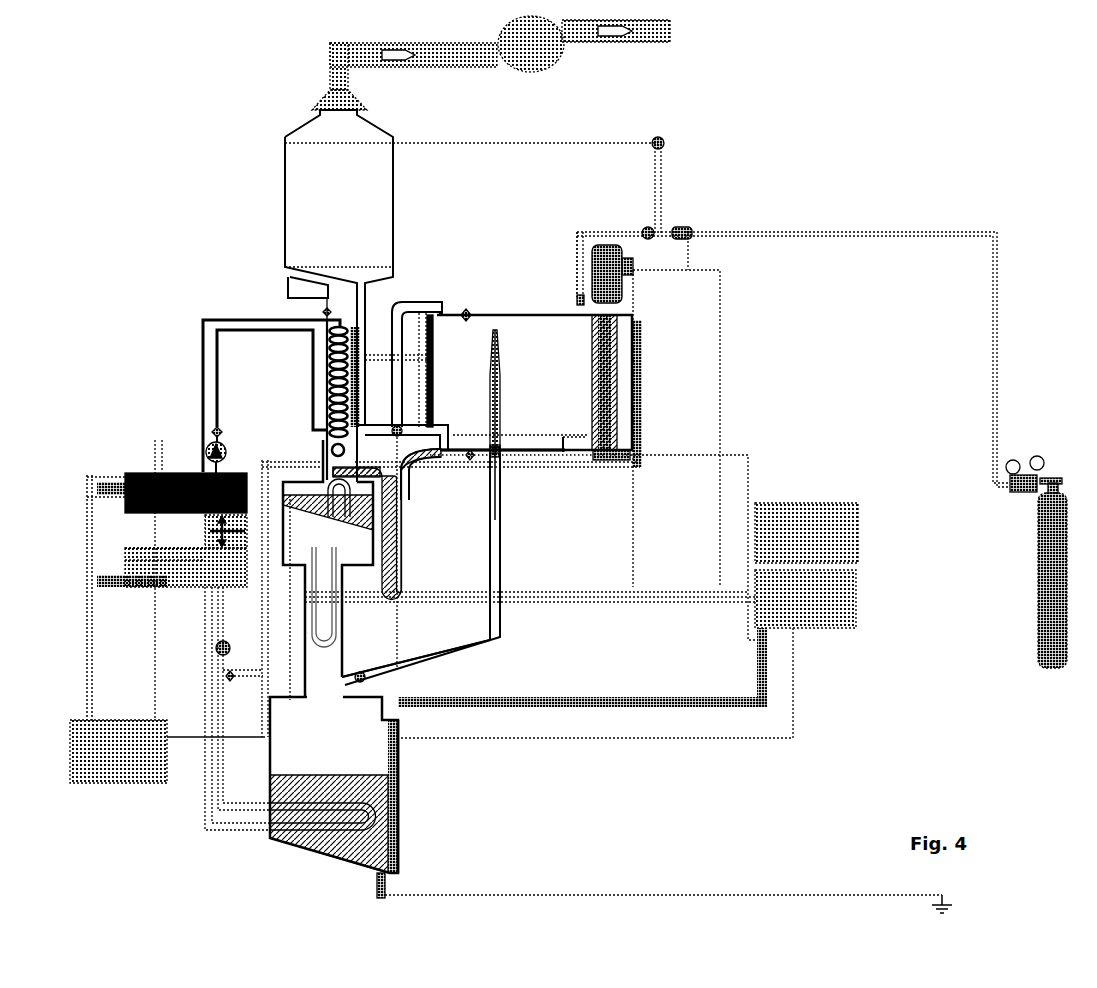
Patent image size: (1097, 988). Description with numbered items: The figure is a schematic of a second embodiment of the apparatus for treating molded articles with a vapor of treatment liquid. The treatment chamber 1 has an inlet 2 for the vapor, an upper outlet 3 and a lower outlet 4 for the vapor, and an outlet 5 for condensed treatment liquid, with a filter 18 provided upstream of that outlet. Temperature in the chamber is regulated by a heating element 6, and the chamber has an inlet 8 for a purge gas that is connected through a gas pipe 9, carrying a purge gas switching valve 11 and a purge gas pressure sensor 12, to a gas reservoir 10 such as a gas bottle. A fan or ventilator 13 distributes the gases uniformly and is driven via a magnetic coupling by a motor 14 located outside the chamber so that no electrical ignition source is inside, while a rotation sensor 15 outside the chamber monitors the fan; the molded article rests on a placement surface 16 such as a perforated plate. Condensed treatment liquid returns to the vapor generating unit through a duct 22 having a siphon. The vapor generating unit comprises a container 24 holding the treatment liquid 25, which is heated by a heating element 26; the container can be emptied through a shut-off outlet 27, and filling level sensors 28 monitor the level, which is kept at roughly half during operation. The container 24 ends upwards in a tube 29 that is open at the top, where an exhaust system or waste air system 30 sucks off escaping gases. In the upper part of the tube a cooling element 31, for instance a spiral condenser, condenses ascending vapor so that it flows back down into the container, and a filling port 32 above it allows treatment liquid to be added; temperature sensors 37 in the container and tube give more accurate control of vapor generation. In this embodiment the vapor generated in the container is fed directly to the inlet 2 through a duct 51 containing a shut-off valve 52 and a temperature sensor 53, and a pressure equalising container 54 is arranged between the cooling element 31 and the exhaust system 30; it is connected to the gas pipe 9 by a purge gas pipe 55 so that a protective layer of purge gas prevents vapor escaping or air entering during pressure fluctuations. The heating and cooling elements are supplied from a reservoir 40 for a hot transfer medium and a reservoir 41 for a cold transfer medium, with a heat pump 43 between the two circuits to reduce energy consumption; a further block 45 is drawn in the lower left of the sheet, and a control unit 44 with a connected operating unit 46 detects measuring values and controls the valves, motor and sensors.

The treatment chamber 1 is at (530, 335).
The inlet for the vapor of treatment liquid 2 is at (498, 460).
The upper outlet for vapor of treatment liquid 3 is at (445, 318).
The lower outlet for the vapor of treatment liquid 4 is at (452, 440).
The outlet for condensed treatment liquid 5 is at (422, 462).
The heating element 6 is at (643, 370).
The inlet for a purge gas 8 is at (578, 312).
The gas pipe 9 is at (885, 243).
The gas reservoir 10 is at (1038, 600).
The purge gas switching valve 11 is at (656, 150).
The purge gas pressure sensor 12 is at (690, 228).
The fan or ventilator 13 is at (608, 424).
The motor 14 is at (618, 285).
The rotation sensor 15 is at (608, 462).
The placement surface 16 is at (566, 456).
The filter 18 is at (448, 452).
The duct having a siphon 22 is at (410, 535).
The container for the treatment liquid 24 is at (270, 750).
The treatment liquid 25 is at (345, 845).
The heating element 26 is at (315, 835).
The outlet 27 is at (390, 885).
The filling level sensors 28 is at (400, 800).
The tube 29 is at (305, 678).
The exhaust system or waste air system 30 is at (330, 78).
The cooling element 31 is at (335, 338).
The filling port 32 is at (288, 285).
The temperature sensors 37 is at (400, 855).
The reservoir for a hot transfer medium 40 is at (182, 565).
The reservoir for a cold transfer medium 41 is at (125, 475).
The heat pump 43 is at (205, 533).
The control unit 44 is at (580, 485).
The power supply 45 is at (167, 751).
The operating unit 46 is at (806, 533).
The duct for the vapor of treatment liquid 51 is at (503, 625).
The shut-off valve 52 is at (365, 682).
The temperature sensor 53 is at (405, 665).
The pressure equalising container 54 is at (300, 182).
The purge gas pipe 55 is at (522, 148).